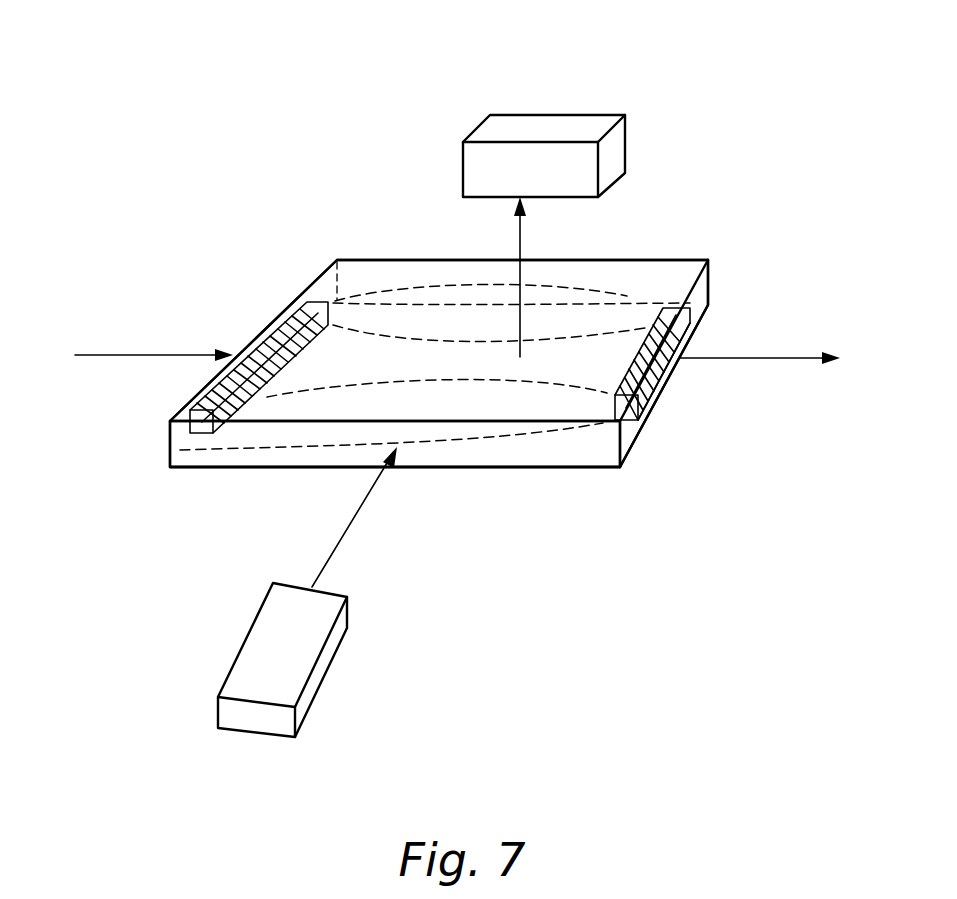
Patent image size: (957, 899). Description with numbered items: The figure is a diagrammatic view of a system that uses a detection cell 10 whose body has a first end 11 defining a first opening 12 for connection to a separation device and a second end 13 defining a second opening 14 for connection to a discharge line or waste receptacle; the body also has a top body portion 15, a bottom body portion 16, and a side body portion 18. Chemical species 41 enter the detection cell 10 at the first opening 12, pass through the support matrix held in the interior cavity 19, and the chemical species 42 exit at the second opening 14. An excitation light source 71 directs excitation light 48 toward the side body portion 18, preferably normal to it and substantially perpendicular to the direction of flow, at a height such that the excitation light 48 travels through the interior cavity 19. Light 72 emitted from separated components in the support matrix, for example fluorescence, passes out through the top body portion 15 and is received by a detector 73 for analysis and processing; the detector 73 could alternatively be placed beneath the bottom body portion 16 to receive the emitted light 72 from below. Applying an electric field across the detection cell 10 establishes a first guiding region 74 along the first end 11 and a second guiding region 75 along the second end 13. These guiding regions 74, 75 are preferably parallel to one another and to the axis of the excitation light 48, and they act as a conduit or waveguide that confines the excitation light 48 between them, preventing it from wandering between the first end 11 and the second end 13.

The detection cell 10 is at (608, 270).
The first end 11 is at (323, 287).
The first opening 12 is at (203, 387).
The second end 13 is at (698, 298).
The second opening 14 is at (672, 375).
The top body portion 15 is at (402, 268).
The bottom body portion 16 is at (270, 467).
The side body portion 18 is at (588, 448).
The interior cavity 19 is at (510, 413).
The chemical species 41 is at (154, 339).
The chemical species 42 is at (760, 341).
The excitation light 48 is at (370, 500).
The excitation light source 71 is at (293, 647).
The emitted light 72 is at (523, 245).
The detector 73 is at (573, 130).
The first guiding region 74 is at (280, 330).
The second guiding region 75 is at (662, 308).